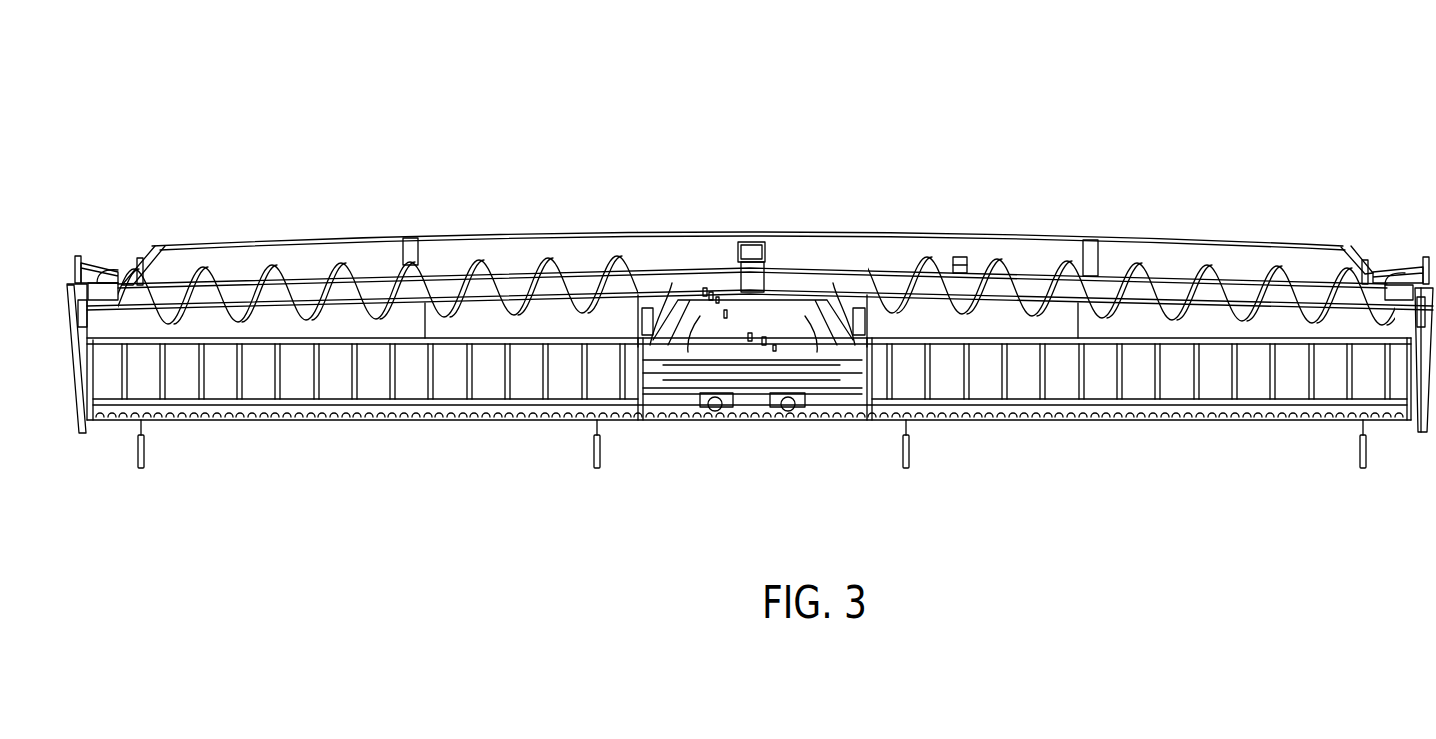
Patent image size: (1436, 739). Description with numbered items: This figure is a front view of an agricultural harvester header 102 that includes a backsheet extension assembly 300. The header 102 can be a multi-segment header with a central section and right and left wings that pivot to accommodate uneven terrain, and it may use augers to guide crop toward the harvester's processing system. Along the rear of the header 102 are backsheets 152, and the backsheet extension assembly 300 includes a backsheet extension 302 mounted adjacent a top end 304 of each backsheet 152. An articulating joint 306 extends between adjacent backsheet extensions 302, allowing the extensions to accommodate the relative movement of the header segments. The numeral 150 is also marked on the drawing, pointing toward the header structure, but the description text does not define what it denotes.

The header 102 is at (950, 106).
The frame 150 is at (1358, 192).
The backsheet 152 is at (397, 332).
The backsheet extension assembly 300 is at (840, 212).
The backsheet extension 302 is at (265, 232).
The top end 304 is at (362, 272).
The articulating joint 306 is at (412, 228).